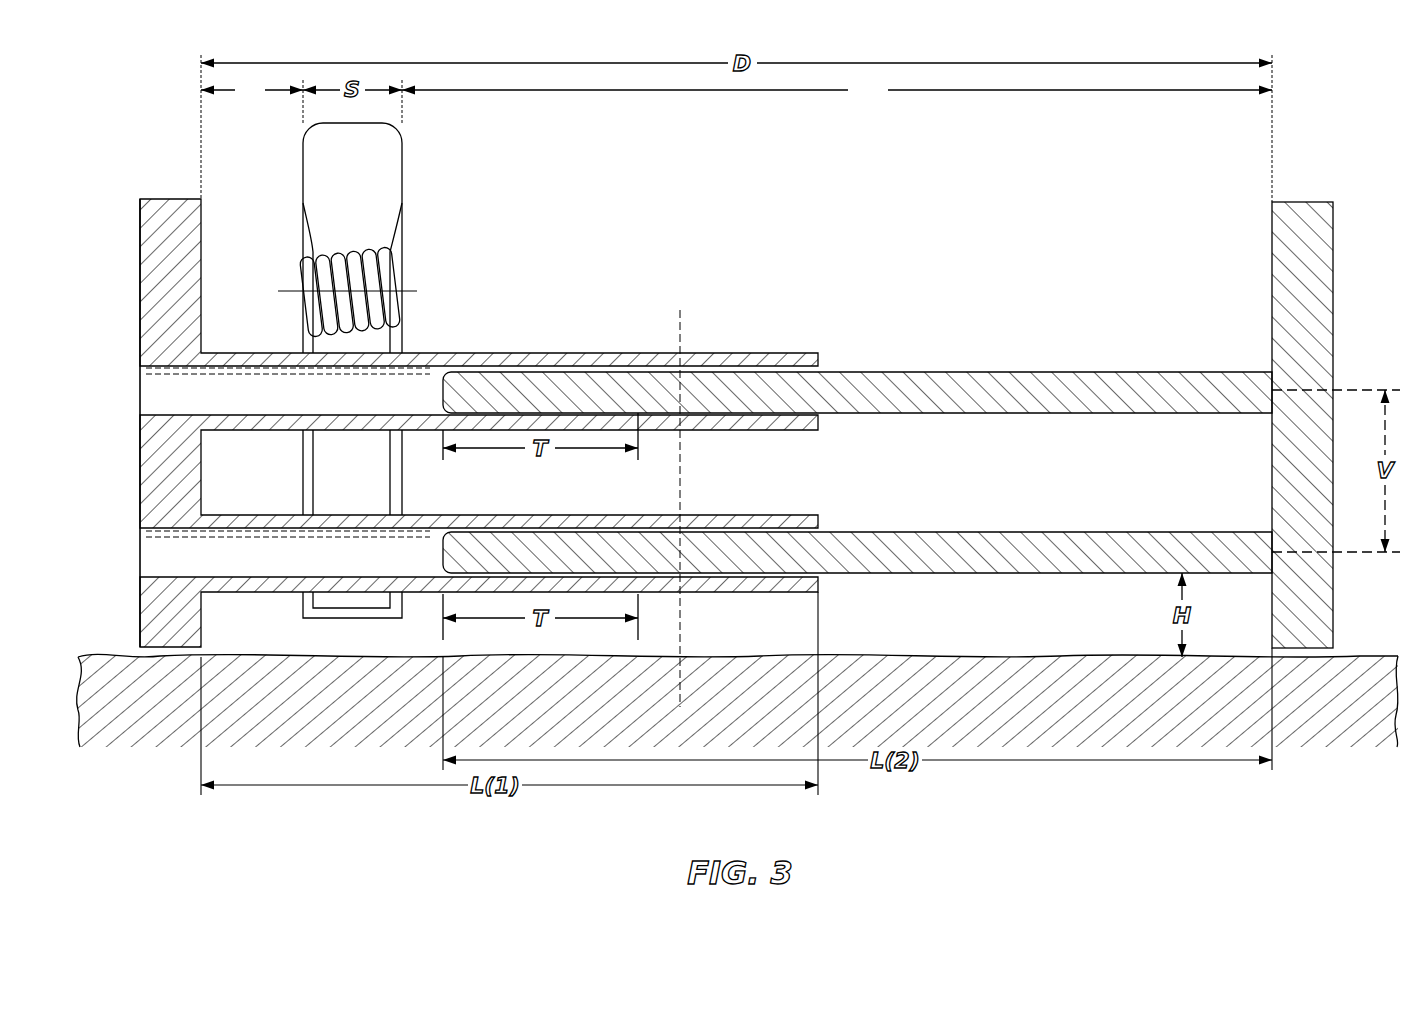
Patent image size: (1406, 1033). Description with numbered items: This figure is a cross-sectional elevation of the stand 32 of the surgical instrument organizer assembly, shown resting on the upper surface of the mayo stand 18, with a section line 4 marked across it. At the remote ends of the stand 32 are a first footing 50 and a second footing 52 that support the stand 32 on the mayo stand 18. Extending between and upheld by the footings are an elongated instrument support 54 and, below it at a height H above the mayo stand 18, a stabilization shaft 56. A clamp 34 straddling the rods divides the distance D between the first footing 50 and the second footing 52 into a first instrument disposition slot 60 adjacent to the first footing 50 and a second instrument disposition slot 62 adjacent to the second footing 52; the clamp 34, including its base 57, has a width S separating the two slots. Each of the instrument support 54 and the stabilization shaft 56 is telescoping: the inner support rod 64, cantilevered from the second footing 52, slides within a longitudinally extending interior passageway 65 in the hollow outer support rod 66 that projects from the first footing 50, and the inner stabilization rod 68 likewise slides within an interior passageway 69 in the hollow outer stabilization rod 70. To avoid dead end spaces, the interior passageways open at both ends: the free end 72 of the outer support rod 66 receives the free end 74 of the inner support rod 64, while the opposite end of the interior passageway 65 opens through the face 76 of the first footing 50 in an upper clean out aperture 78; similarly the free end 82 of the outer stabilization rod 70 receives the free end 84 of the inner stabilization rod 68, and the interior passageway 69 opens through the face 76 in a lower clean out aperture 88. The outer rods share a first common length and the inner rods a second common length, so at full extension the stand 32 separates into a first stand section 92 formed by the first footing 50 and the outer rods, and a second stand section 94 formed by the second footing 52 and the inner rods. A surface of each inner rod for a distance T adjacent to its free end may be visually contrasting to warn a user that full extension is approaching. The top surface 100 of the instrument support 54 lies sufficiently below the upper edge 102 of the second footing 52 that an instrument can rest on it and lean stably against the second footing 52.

The mayo stand 18 is at (1100, 647).
The stand 32 is at (860, 162).
The clamp 34 is at (416, 175).
The section line 4- 4 is at (700, 707).
The first footing 50 is at (183, 188).
The second footing 52 is at (1255, 473).
The instrument support 54 is at (580, 222).
The stabilization shaft 56 is at (600, 457).
The lamp base 57 is at (348, 600).
The first instrument disposition slot 60 is at (252, 127).
The second instrument disposition slot 62 is at (837, 128).
The inner support rod 64 is at (445, 380).
The interior passageway 65 is at (246, 386).
The outer support rod 66 is at (540, 342).
The inner stabilization rod 68 is at (430, 536).
The interior passageway 69 is at (232, 540).
The outer stabilization rod 70 is at (542, 503).
The free end of outer support rod 72 is at (800, 352).
The free end of inner support rod 74 is at (466, 390).
The face of first footing 76 is at (140, 266).
The upper clean out aperture 78 is at (92, 340).
The free end of outer stabilization rod 82 is at (783, 515).
The free end of inner stabilization rod 84 is at (470, 548).
The lower clean out aperture 88 is at (92, 500).
The first stand section 92 is at (634, 210).
The second stand section 94 is at (955, 274).
The top surface 100 is at (1220, 371).
The upper edge 102 is at (1300, 202).